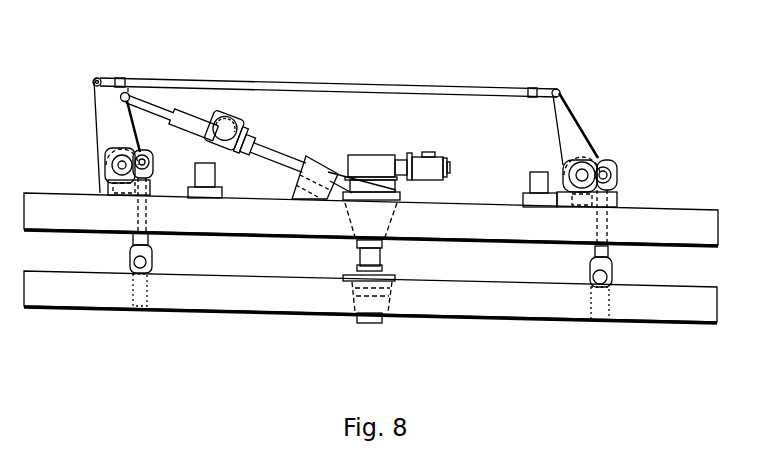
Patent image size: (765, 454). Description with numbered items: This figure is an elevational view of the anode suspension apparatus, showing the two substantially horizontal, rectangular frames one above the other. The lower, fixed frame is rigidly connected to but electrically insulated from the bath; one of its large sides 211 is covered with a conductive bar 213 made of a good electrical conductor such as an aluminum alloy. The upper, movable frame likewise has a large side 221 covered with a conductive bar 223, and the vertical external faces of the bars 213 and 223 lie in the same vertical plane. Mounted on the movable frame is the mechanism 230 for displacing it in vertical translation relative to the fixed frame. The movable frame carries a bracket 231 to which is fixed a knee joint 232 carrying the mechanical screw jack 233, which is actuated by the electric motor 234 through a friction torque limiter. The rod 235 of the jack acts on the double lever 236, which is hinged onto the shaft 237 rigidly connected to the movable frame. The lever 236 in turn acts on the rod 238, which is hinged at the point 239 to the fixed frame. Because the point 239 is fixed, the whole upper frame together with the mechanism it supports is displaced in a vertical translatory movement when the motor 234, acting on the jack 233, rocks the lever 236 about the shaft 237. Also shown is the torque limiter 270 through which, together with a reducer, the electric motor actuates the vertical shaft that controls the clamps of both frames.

The mechanism for displacing the movable frame 230 is at (78, 126).
The bracket 231 is at (358, 192).
The knee joint 232 is at (312, 157).
The mechanical screw jack 233 is at (192, 120).
The electric motor 234 is at (243, 114).
The rod of the jack 235 is at (163, 108).
The double lever 236 is at (98, 115).
The shaft 237 is at (114, 165).
The rod 238 is at (147, 215).
The hinge point 239 is at (132, 266).
The torque limiter 270 is at (397, 186).
The large side of the movable frame 221 is at (722, 226).
The conductive bar 223 is at (673, 220).
The large side of the fixed frame 211 is at (720, 306).
The conductive bar 213 is at (673, 300).